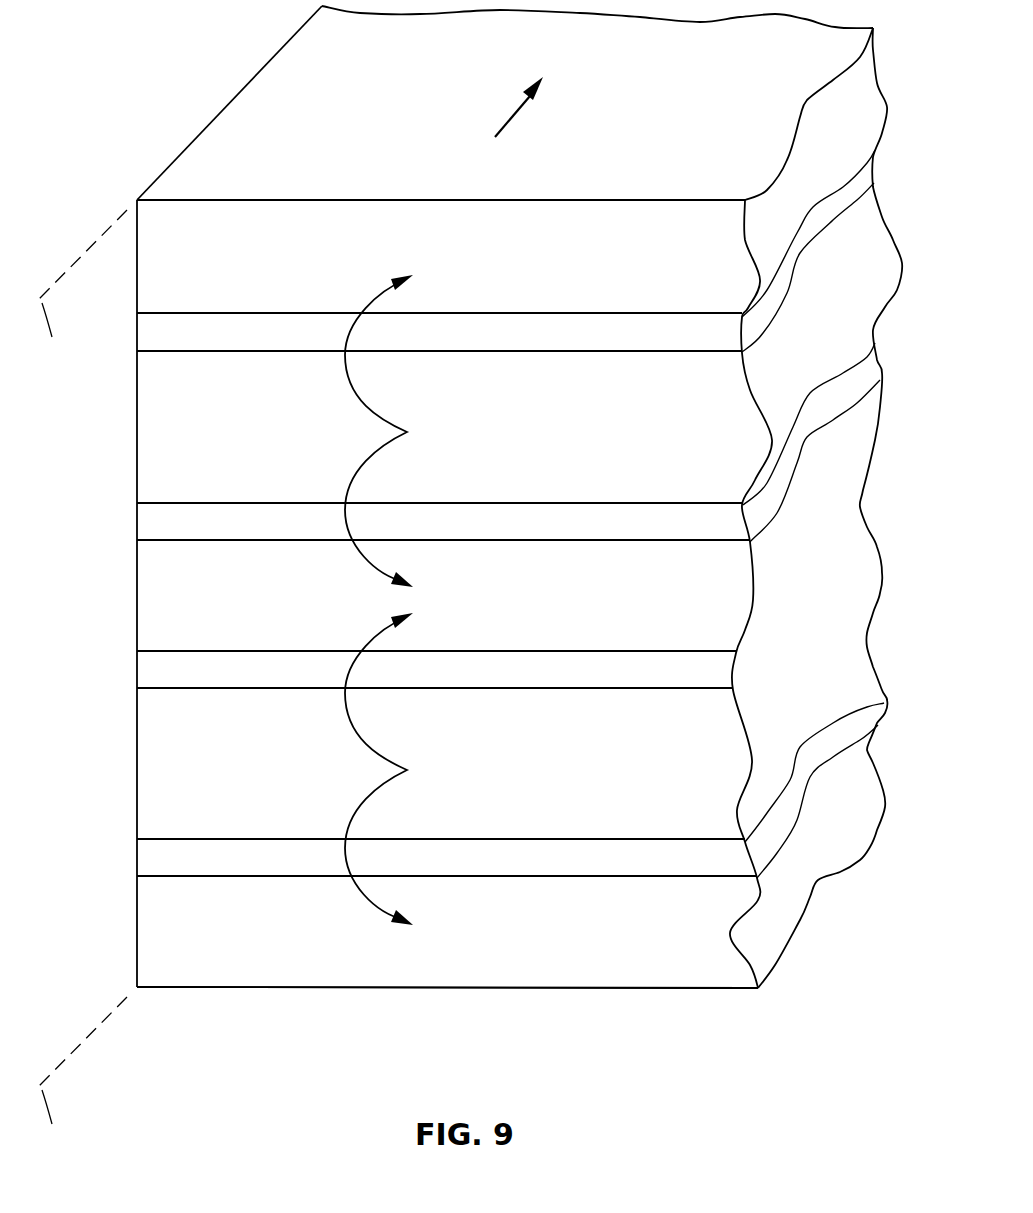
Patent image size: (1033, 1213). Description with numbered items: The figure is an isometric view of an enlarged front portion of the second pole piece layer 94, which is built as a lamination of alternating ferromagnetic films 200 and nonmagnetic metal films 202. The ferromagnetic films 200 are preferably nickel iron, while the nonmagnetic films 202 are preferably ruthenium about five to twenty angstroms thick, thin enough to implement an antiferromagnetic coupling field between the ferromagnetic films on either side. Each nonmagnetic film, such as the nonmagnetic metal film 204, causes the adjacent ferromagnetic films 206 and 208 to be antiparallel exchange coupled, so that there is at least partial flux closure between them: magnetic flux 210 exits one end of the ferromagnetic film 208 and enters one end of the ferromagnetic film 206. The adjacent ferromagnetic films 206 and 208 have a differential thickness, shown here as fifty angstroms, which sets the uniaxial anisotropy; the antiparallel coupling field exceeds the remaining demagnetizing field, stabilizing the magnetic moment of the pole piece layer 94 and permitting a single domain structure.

The second pole piece layer 94 is at (290, 90).
The ferromagnetic films 200 is at (152, 592).
The nonmagnetic metal films 202 is at (627, 512).
The nonmagnetic metal film 204 is at (223, 868).
The ferromagnetic film 206 is at (315, 972).
The ferromagnetic film 208 is at (227, 717).
The magnetic flux 210 is at (352, 808).